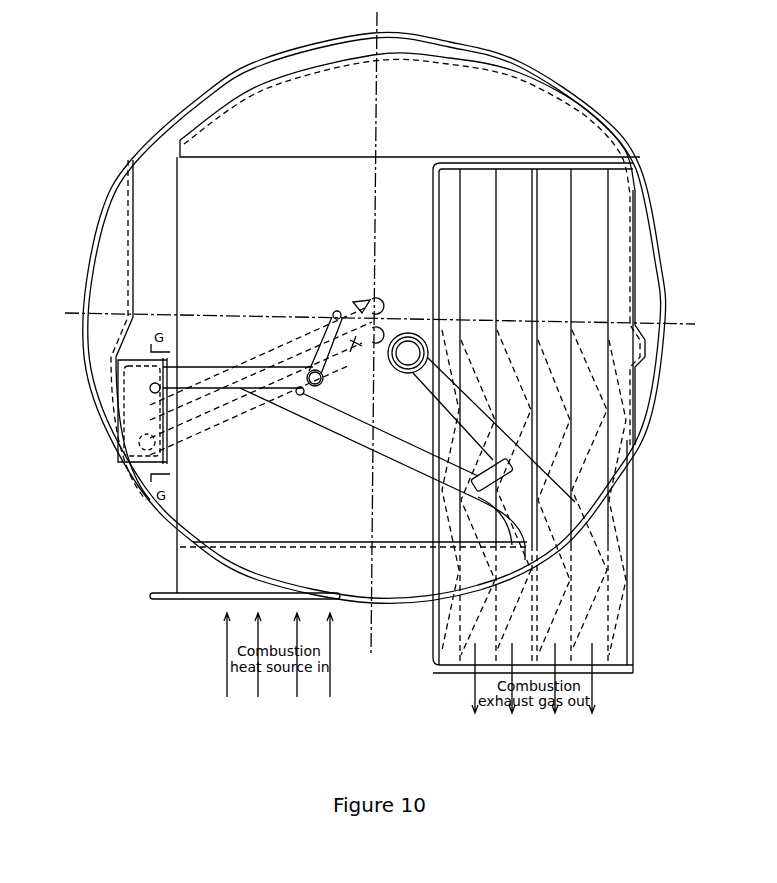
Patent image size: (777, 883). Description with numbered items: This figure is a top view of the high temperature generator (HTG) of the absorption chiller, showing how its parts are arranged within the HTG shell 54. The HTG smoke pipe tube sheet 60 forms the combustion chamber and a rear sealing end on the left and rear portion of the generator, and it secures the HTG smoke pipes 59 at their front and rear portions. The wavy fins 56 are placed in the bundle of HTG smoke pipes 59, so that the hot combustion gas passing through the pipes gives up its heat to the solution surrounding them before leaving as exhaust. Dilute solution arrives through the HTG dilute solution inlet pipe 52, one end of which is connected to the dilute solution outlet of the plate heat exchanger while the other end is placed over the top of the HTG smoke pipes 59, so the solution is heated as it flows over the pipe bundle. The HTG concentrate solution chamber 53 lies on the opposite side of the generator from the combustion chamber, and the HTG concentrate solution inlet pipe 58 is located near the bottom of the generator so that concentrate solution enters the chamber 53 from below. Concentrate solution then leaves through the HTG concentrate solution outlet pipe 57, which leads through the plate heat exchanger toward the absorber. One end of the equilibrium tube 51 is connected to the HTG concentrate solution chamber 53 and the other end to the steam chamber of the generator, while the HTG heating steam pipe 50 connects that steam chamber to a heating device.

The HTG heating steam pipe 50 is at (500, 470).
The equilibrium tube 51 is at (187, 373).
The HTG dilute solution inlet pipe 52 is at (240, 365).
The HTG concentrate solution chamber 53 is at (160, 393).
The HTG shell 54 is at (100, 215).
The wavy fin 56 is at (500, 387).
The HTG concentrate solution outlet pipe 57 is at (155, 388).
The HTG concentrate solution inlet pipe 58 is at (390, 307).
The HTG smoke pipes 59 is at (477, 197).
The HTG smoke pipe tube sheet 60 is at (435, 285).